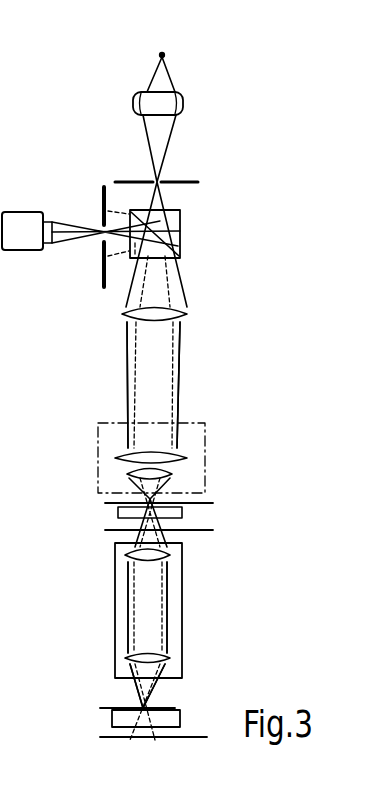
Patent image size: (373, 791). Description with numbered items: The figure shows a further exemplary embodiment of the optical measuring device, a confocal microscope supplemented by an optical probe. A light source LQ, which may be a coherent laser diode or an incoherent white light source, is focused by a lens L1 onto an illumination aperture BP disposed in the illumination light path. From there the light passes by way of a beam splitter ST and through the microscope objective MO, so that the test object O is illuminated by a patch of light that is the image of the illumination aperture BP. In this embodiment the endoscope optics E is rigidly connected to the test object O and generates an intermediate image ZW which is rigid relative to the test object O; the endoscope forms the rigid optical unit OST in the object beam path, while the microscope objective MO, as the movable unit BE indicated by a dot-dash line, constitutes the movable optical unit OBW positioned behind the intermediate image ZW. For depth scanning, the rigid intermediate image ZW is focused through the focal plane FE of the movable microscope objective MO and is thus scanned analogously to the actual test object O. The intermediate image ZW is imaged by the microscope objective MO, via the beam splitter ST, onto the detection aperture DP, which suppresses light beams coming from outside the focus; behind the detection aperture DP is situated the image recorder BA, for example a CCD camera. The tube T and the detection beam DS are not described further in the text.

The light source LQ is at (166, 56).
The lens L1 is at (184, 103).
The illumination aperture BP is at (199, 181).
The detection aperture DP is at (101, 190).
The beam splitter ST is at (182, 236).
The image recorder BA is at (52, 252).
The movable optical unit OBW is at (187, 415).
The tube T is at (78, 383).
The movable unit BE is at (207, 445).
The microscope objective MO is at (110, 458).
The intermediate image ZW is at (184, 514).
The endoscope E is at (187, 573).
The rigid optical unit OST is at (100, 622).
The detection beam DS is at (202, 627).
The test object O is at (110, 715).
The focal plane FE is at (175, 708).